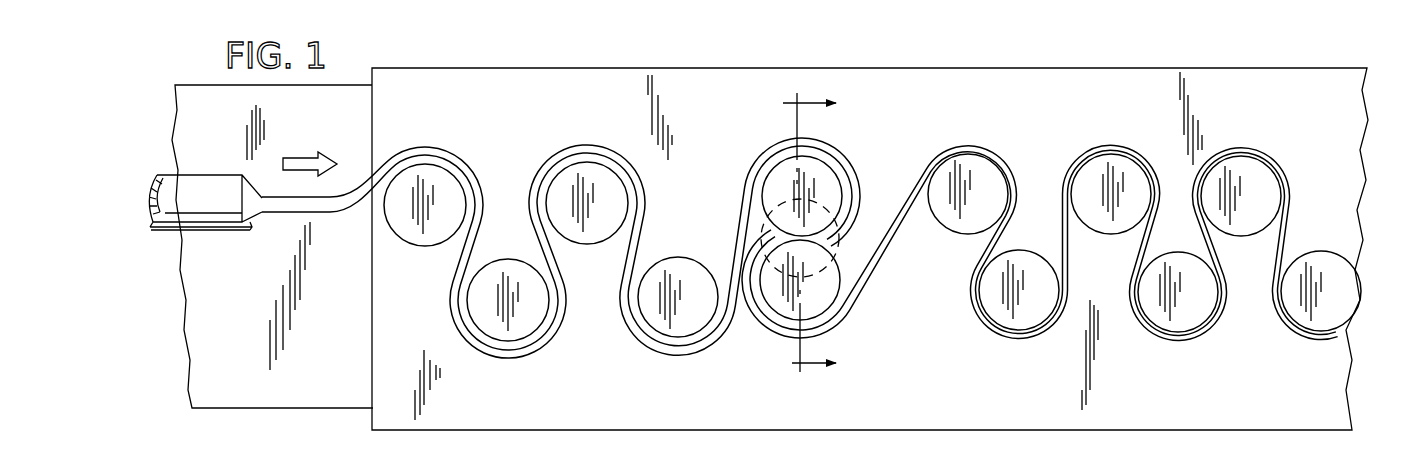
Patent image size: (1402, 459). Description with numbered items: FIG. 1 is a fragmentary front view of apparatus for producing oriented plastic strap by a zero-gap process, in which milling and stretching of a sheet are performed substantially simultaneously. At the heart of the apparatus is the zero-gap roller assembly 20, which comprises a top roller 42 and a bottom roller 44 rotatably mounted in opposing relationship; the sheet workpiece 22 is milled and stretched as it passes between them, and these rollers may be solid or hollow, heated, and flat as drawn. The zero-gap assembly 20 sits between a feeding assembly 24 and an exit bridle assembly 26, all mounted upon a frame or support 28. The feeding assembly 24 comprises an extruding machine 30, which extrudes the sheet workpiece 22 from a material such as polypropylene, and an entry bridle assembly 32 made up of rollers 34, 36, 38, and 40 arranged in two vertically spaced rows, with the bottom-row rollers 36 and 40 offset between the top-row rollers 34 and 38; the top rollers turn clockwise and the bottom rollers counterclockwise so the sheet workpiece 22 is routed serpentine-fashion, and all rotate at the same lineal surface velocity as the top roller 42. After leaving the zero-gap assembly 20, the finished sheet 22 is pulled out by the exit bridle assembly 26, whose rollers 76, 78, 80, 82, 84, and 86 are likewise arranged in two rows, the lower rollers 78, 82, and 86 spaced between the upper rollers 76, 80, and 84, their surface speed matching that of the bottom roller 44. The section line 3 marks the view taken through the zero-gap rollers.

The zero-gap roller assembly 20 is at (834, 211).
The sheet workpiece 22 is at (593, 142).
The feeding assembly 24 is at (200, 92).
The exit bridle assembly 26 is at (1144, 212).
The frame or support 28 is at (940, 372).
The extruding machine 30 is at (216, 174).
The entry bridle assembly 32 is at (594, 308).
The roller 34 is at (412, 236).
The roller 36 is at (498, 270).
The roller 38 is at (596, 228).
The roller 40 is at (680, 267).
The top roller 42 is at (828, 182).
The bottom roller 44 is at (828, 294).
The roller 76 is at (961, 218).
The roller 78 is at (1027, 258).
The roller 80 is at (1113, 228).
The roller 82 is at (1183, 265).
The roller 84 is at (1250, 223).
The roller 86 is at (1320, 266).
The section line 3- 3 is at (805, 236).